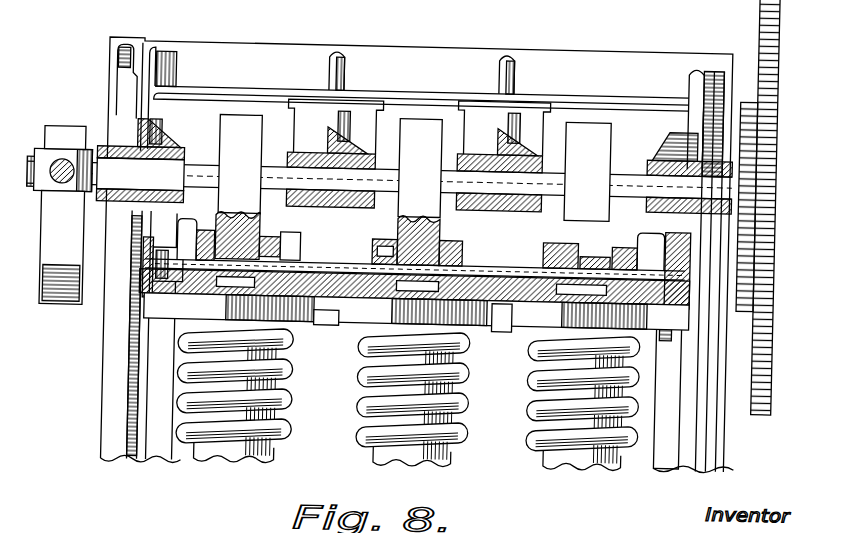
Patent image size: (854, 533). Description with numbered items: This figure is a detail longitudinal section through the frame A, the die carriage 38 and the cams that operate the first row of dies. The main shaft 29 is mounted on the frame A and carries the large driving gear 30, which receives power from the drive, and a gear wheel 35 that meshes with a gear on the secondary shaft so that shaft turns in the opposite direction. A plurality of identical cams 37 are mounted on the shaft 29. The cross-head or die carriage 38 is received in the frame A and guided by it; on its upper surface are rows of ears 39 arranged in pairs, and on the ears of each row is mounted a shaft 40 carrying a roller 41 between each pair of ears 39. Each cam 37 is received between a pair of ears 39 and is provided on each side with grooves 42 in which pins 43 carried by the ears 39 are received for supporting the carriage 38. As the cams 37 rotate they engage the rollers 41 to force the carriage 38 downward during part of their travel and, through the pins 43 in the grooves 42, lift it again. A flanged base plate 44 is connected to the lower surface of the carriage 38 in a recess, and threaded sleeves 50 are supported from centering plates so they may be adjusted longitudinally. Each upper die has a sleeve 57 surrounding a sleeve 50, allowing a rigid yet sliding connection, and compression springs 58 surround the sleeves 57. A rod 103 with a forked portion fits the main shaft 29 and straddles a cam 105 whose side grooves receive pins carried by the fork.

The main shaft 29 is at (628, 170).
The driving gear 30 is at (770, 137).
The gear wheel 35 is at (773, 77).
The cam 37 is at (608, 121).
The die carriage 38 is at (335, 253).
The ears 39 is at (453, 240).
The shaft 40 is at (505, 259).
The roller 41 is at (331, 315).
The grooves 42 is at (277, 236).
The pins 43 is at (208, 236).
The flanged base plate 44 is at (543, 304).
The sleeve 50 is at (375, 329).
The sleeve 57 is at (359, 418).
The compression springs 58 is at (476, 392).
The rod 103 is at (71, 161).
The cam 105 is at (81, 306).
The frame A is at (121, 435).